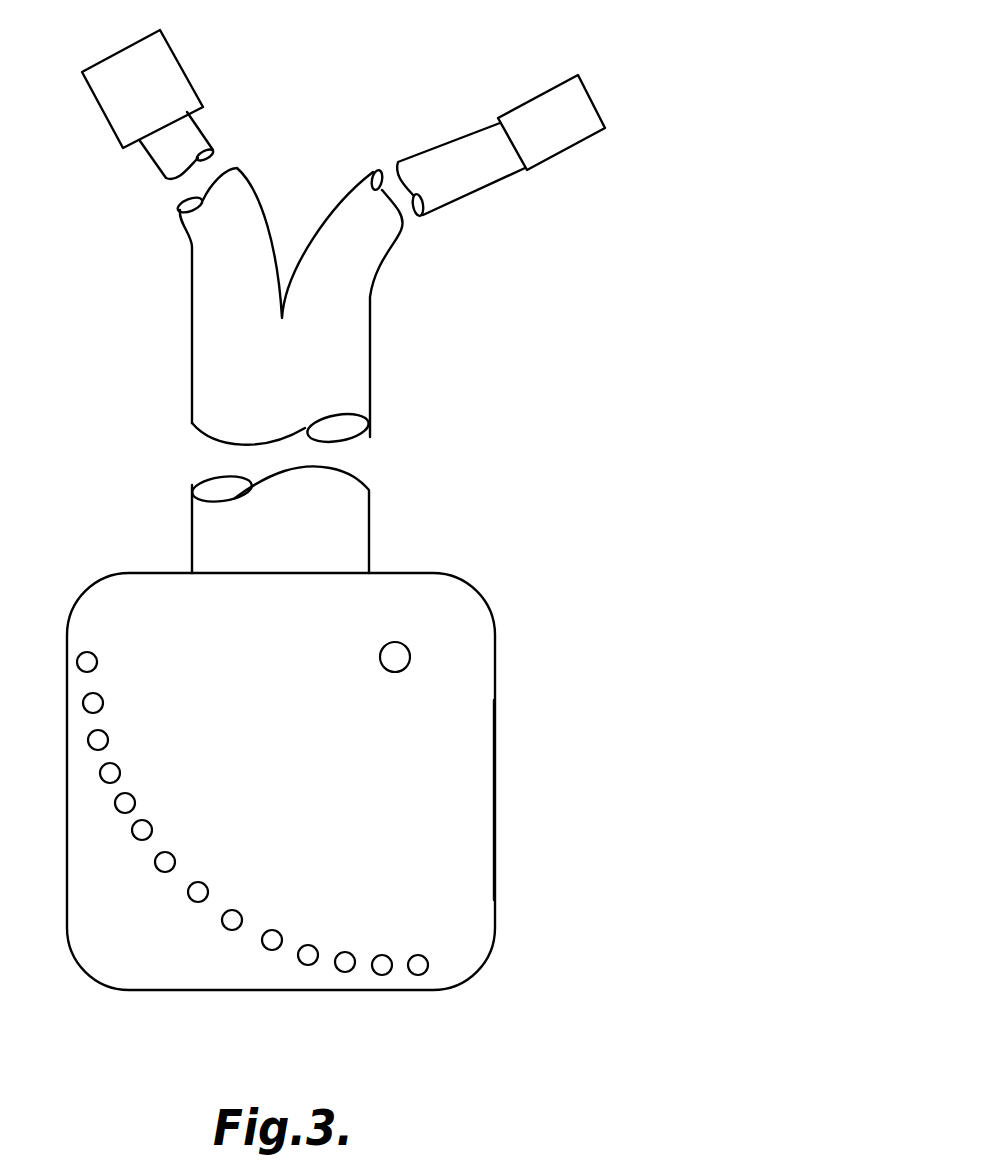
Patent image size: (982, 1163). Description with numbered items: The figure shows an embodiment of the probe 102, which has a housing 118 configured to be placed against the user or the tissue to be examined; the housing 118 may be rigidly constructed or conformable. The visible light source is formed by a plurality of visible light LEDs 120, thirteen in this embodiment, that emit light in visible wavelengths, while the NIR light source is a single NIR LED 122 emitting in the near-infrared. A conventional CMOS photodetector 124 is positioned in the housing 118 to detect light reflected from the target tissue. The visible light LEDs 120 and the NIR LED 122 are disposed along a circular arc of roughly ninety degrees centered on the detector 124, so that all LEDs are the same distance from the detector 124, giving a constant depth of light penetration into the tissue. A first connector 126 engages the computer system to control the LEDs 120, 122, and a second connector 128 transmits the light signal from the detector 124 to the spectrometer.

The probe 102 is at (497, 747).
The housing 118 is at (483, 833).
The visible light LEDs 120 is at (95, 655).
The NIR LED 122 is at (427, 958).
The CMOS photodetector 124 is at (408, 647).
The first connector 126 is at (587, 91).
The second connector 128 is at (98, 65).